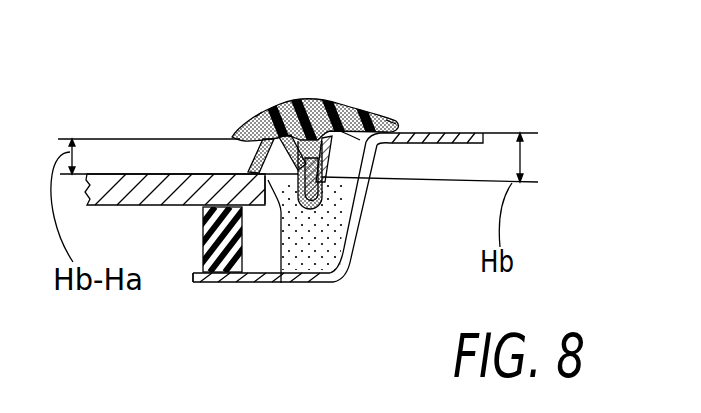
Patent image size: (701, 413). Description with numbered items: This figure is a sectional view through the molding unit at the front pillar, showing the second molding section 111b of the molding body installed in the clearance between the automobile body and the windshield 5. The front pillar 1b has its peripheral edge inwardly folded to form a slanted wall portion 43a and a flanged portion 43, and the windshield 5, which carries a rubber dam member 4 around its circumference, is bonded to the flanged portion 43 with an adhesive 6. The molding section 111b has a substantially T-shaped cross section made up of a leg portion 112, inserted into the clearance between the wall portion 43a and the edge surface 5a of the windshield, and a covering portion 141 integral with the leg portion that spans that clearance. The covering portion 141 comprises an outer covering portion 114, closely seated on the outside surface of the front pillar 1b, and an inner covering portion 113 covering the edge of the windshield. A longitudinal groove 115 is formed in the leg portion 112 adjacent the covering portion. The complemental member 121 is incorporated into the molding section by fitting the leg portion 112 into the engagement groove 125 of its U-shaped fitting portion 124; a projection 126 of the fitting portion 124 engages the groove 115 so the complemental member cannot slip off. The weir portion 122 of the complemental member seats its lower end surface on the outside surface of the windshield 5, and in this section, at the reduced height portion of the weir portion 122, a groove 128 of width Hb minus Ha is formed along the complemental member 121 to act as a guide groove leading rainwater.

The front pillar 1b is at (437, 133).
The dam member 4 is at (204, 258).
The windshield 5 is at (106, 205).
The edge surface 5a is at (195, 284).
The adhesive 6 is at (325, 265).
The flanged portion 43 is at (252, 285).
The slanted wall portion 43a is at (350, 248).
The second molding section 111b is at (320, 106).
The leg portion 112 is at (281, 283).
The inner covering portion 113 is at (277, 105).
The outer covering portion 114 is at (383, 118).
The groove 115 is at (326, 163).
The complemental member 121 is at (262, 178).
The weir portion 122 is at (278, 137).
The fitting portion 124 is at (312, 192).
The engagement groove 125 is at (315, 170).
The projection 126 is at (345, 137).
The groove 128 is at (240, 161).
The covering portion 141 is at (303, 107).